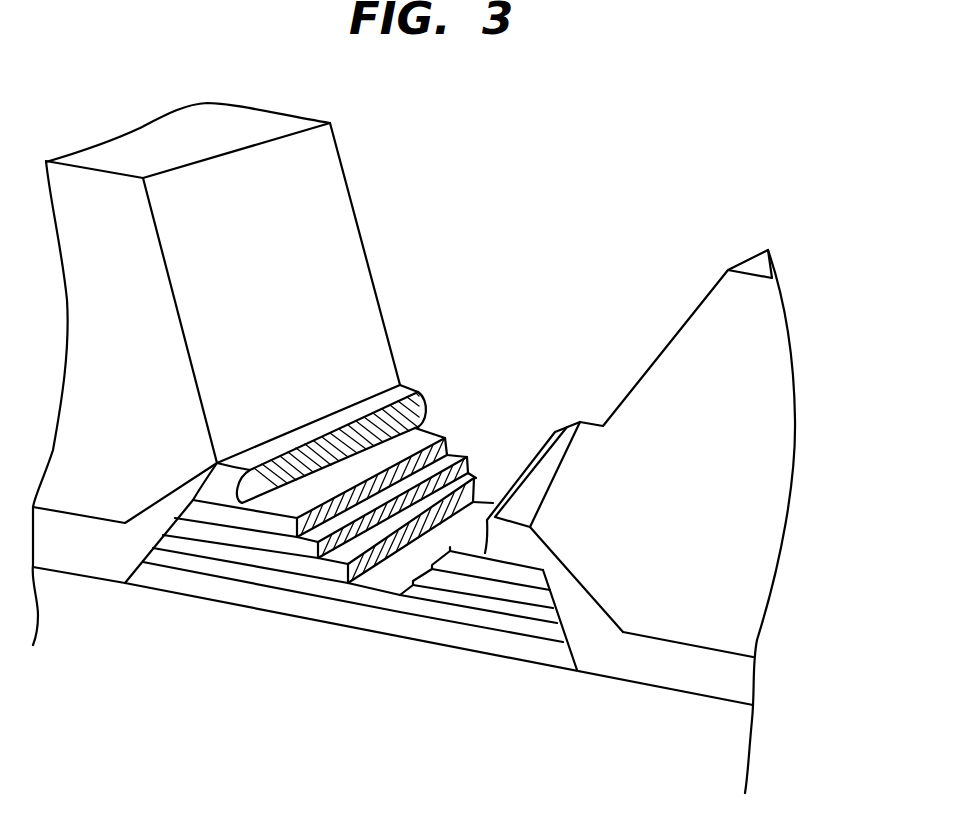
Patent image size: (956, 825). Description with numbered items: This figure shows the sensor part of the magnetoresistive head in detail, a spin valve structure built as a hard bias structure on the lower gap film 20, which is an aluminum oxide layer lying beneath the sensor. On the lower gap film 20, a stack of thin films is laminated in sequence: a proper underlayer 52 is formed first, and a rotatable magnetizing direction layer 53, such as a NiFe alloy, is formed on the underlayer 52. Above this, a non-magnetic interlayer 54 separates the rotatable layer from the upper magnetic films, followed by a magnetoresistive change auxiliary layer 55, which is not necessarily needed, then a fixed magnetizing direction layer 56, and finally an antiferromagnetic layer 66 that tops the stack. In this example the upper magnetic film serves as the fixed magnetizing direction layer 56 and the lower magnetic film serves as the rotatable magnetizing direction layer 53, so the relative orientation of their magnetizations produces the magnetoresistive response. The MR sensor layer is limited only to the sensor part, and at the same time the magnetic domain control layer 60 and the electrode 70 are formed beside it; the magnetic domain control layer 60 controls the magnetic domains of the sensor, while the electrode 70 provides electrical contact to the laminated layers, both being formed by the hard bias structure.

The lower gap film 20 is at (715, 742).
The underlayer 52 is at (436, 632).
The rotatable magnetizing direction layer 53 is at (377, 597).
The non-magnetic interlayer 54 is at (325, 572).
The magnetoresistive change auxiliary layer 55 is at (290, 547).
The fixed magnetizing direction layer 56 is at (250, 522).
The magnetic domain control layer 60 is at (727, 677).
The antiferromagnetic layer 66 is at (223, 493).
The electrode 70 is at (738, 402).